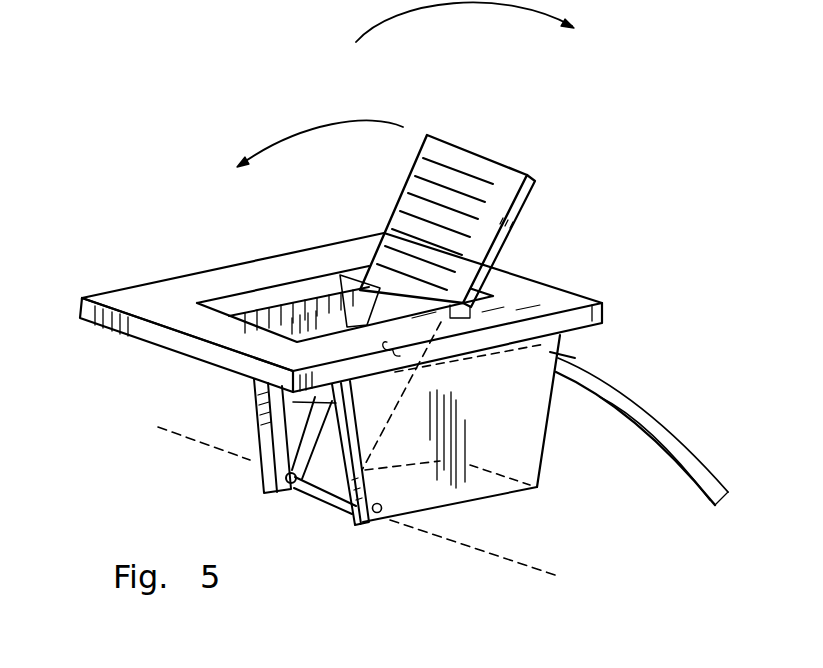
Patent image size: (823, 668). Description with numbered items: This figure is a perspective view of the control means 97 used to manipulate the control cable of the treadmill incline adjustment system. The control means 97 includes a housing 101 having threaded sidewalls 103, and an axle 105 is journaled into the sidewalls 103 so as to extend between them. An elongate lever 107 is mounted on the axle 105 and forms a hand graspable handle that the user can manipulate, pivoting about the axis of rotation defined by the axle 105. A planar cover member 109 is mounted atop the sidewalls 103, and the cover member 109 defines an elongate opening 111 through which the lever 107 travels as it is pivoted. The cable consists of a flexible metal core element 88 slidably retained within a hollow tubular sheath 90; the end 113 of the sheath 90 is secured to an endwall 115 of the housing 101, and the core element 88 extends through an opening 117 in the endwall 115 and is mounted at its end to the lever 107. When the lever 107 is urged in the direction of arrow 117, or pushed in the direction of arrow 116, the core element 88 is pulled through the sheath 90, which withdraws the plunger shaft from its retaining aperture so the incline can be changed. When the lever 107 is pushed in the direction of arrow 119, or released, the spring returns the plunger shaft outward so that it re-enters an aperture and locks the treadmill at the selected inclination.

The core element 88 is at (527, 373).
The sheath 90 is at (690, 468).
The control means 97 is at (183, 320).
The housing 101 is at (224, 262).
The sidewalls 103 is at (257, 450).
The axle 105 is at (293, 486).
The lever 107 is at (490, 158).
The cover member 109 is at (112, 293).
The opening 111 is at (358, 322).
The end of sheath 113 is at (562, 364).
The endwall 115 is at (527, 443).
The arrow 116 is at (314, 120).
The opening in endwall / arrow 117 is at (535, 380).
The arrow 119 is at (478, 6).